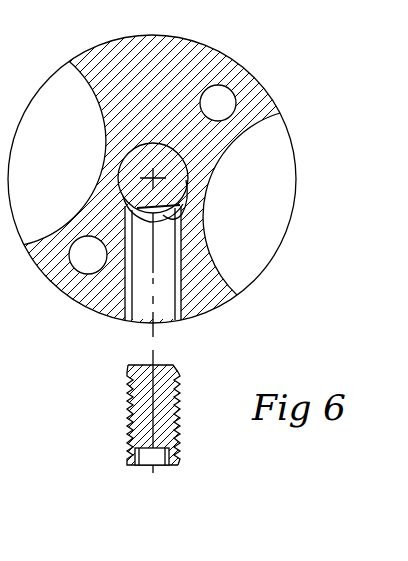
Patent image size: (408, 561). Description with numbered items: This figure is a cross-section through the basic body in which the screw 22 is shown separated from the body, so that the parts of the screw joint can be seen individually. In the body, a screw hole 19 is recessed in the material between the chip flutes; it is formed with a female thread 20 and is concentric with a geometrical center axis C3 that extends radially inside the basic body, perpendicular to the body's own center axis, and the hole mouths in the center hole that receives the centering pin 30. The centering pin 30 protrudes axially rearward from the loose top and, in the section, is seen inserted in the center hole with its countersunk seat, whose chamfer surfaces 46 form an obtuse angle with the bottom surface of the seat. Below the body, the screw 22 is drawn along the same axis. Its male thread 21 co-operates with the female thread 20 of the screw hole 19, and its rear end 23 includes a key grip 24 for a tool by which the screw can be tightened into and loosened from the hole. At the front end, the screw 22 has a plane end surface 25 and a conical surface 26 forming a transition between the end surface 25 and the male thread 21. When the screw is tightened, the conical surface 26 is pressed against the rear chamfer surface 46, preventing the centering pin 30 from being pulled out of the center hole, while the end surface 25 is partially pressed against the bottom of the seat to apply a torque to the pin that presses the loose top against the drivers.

The centering pin 30 is at (174, 168).
The chamfer surface 46 is at (160, 216).
The screw hole 19 is at (129, 304).
The female thread 20 is at (172, 270).
The center axis C3 is at (153, 328).
The screw 22 is at (132, 434).
The end surface 25 is at (162, 362).
The conical surface 26 is at (128, 370).
The male thread 21 is at (177, 412).
The rear end 23 is at (132, 465).
The key grip 24 is at (165, 462).